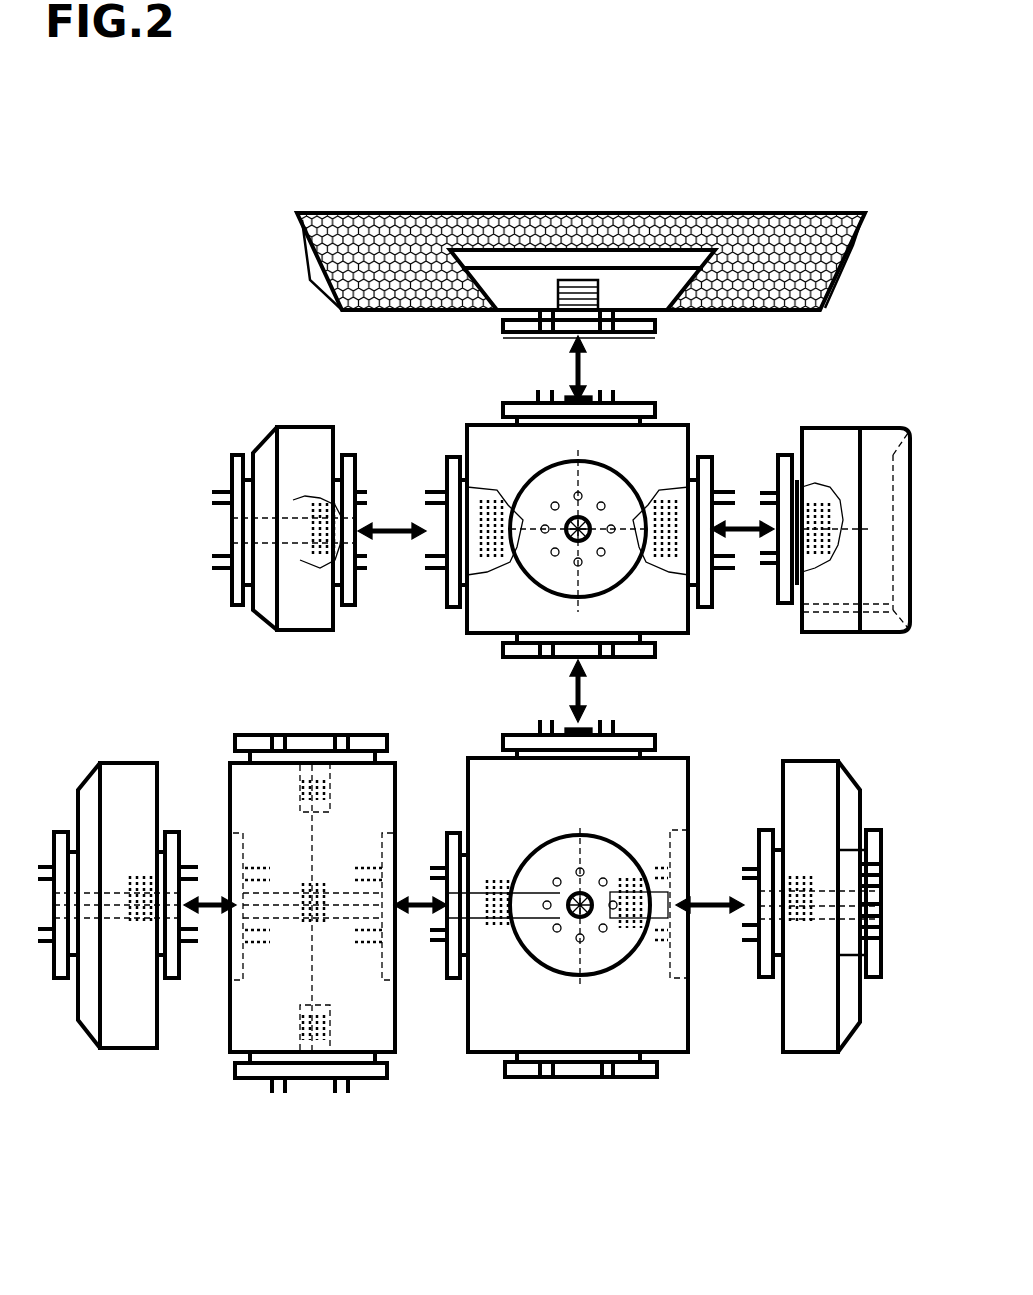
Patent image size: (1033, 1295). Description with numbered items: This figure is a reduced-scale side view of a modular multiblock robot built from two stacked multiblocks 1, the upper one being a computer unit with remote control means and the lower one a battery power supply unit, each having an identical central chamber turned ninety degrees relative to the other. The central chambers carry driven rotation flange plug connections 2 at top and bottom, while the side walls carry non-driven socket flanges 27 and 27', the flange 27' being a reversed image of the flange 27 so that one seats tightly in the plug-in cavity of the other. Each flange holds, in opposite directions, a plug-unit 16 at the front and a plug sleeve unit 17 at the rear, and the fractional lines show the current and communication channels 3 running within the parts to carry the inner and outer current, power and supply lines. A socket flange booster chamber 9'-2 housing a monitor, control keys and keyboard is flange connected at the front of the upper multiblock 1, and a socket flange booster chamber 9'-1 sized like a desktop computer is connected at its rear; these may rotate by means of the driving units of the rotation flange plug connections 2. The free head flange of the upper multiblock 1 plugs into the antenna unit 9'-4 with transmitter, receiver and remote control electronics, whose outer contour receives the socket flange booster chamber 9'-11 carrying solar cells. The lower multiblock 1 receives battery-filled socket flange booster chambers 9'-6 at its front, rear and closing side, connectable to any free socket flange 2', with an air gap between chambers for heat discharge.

The multiblock 1 is at (655, 652).
The rotation flange plug connection 2 is at (480, 736).
The free socket flange 2' is at (517, 809).
The current and communication channel 3 is at (292, 510).
The plug-unit 16 is at (225, 521).
The plug sleeve unit 17 is at (560, 335).
The socket flange 27 is at (463, 714).
The socket flange 27' is at (460, 926).
The socket flange booster chamber 9'-1 is at (247, 531).
The socket flange booster chamber 9'-2 is at (853, 500).
The antenna unit 9'-4 is at (546, 310).
The socket flange booster chamber 9'-6 is at (469, 976).
The socket flange booster chamber 9'-11 is at (517, 261).